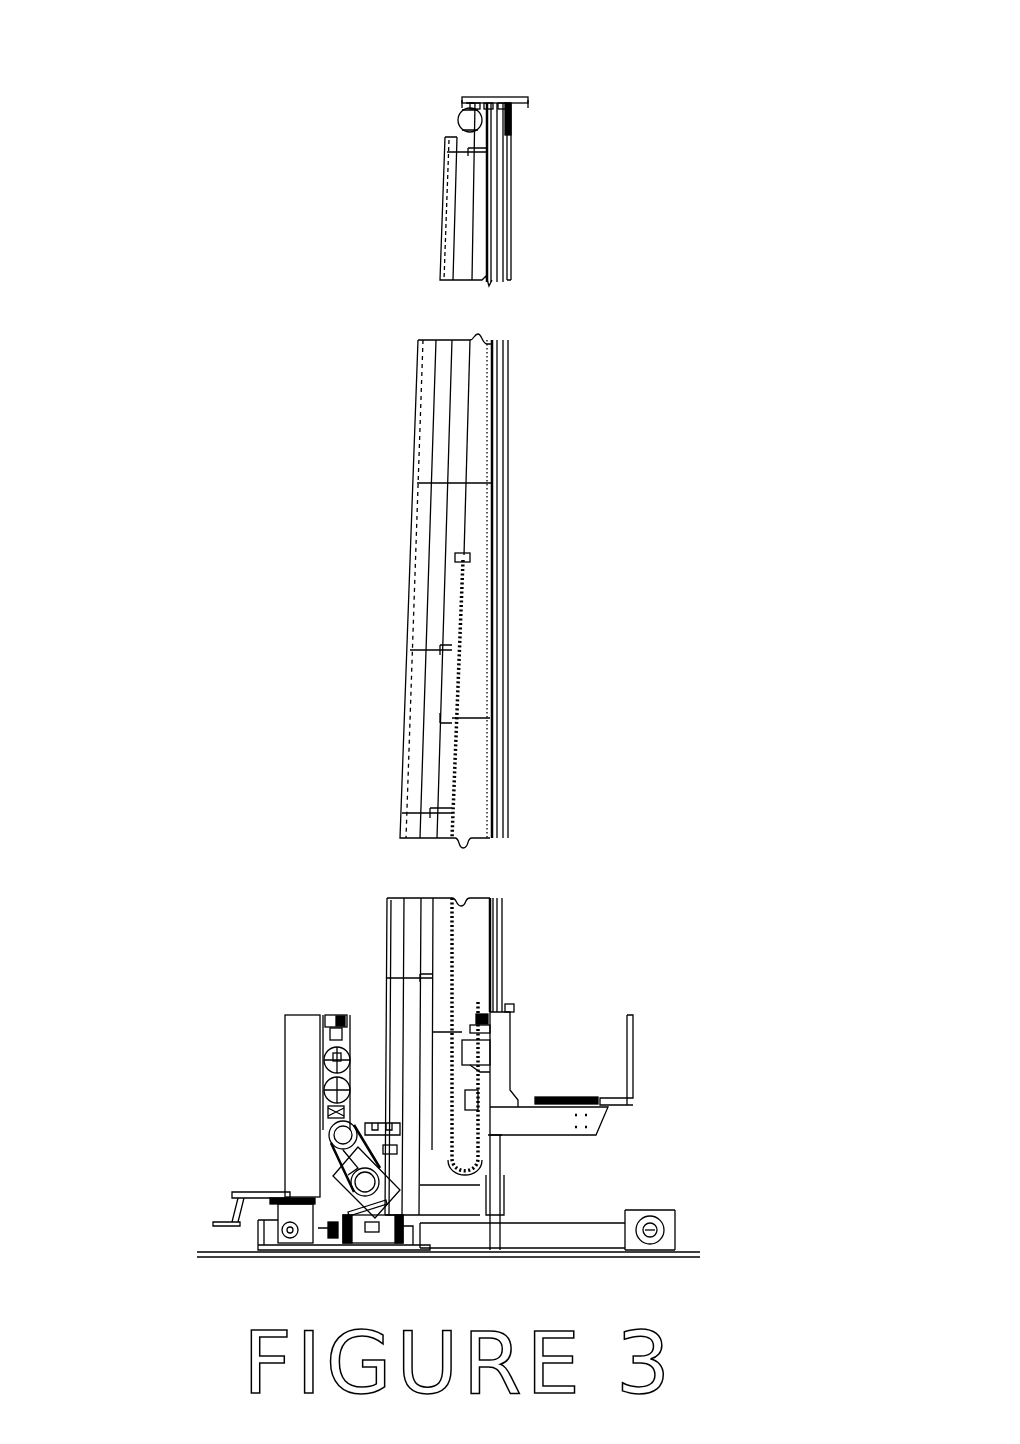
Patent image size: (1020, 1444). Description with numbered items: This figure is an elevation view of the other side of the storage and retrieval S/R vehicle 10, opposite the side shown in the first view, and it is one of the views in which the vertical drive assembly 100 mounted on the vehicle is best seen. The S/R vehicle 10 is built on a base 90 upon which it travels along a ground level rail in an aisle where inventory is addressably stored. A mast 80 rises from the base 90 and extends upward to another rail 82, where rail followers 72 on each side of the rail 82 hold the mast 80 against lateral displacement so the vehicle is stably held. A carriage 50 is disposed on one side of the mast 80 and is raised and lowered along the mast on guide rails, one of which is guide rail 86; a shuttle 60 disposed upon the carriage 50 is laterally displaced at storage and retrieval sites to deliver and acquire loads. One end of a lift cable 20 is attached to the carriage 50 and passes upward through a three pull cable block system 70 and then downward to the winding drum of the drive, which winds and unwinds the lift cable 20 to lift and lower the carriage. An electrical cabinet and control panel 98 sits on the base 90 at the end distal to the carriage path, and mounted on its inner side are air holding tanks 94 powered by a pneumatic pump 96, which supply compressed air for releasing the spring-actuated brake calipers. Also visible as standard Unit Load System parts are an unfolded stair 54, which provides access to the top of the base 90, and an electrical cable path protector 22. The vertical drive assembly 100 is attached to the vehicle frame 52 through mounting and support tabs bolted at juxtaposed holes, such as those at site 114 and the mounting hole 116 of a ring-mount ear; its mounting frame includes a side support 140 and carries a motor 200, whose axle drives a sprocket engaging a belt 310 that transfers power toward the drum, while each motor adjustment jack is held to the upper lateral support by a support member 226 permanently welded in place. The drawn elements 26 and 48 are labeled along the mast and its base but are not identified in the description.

The S/R vehicle 10 is at (590, 508).
The lift cable 20 is at (455, 266).
The electrical cable path protector 22 is at (455, 795).
The lower post section 26 is at (502, 1205).
The mast 48 is at (444, 184).
The carriage 50 is at (637, 1062).
The frame 52 is at (288, 1020).
The unfolded stair 54 is at (235, 1202).
The shuttle 60 is at (565, 1104).
The three pull cable block system 70 is at (458, 120).
The rail followers 72 is at (501, 100).
The mast 80 is at (495, 186).
The rail 82 is at (470, 100).
The guide rail 86 is at (505, 612).
The base 90 is at (687, 1230).
The air holding tank 94 is at (367, 1105).
The pneumatic pump 96 is at (353, 1004).
The electrical cabinet and control panel 98 is at (284, 1034).
The vertical drive assembly 100 is at (294, 956).
The site 114 is at (410, 1198).
The mounting hole 116 is at (330, 1162).
The side support 140 is at (500, 1178).
The motor 200 is at (325, 1130).
The support member 226 is at (332, 1186).
The belt 310 is at (334, 1180).